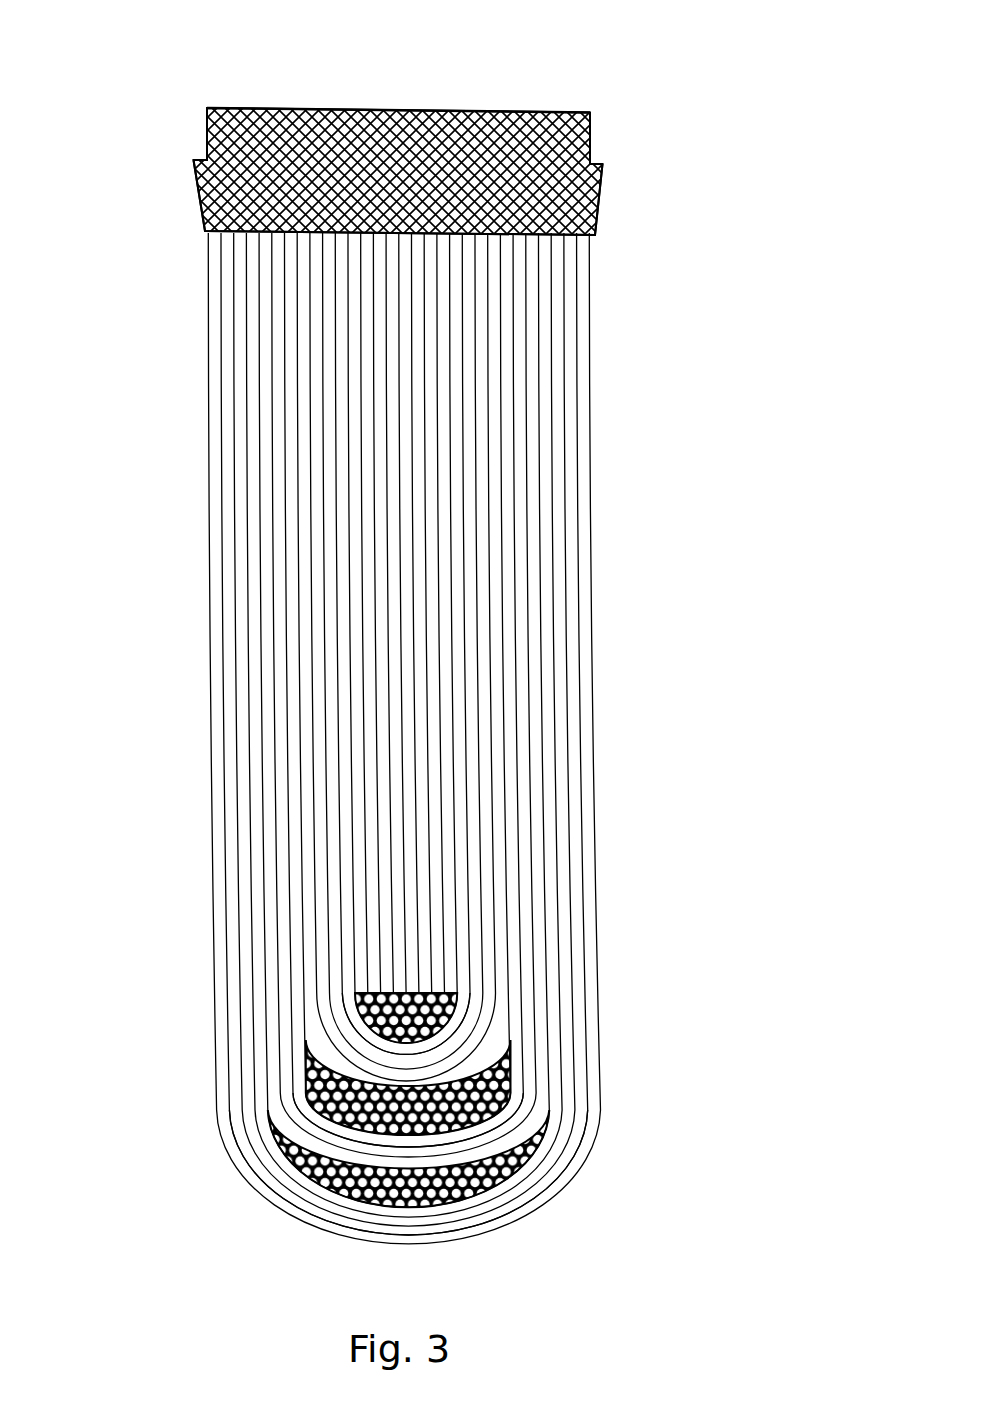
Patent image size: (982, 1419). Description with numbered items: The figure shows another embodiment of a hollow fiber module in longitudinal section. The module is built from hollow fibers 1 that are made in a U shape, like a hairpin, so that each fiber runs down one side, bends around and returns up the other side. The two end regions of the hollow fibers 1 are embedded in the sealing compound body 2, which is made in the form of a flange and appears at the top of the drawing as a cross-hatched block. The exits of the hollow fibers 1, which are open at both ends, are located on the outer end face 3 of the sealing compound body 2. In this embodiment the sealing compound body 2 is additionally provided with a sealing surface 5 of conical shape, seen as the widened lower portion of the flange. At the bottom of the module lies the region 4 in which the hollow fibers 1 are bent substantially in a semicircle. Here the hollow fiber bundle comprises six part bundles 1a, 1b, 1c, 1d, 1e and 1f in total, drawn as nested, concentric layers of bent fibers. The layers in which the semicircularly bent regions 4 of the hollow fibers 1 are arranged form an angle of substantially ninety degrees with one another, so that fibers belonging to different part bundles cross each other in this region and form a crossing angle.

The hollow fibers 1 is at (535, 511).
The part bundle 1a is at (445, 1000).
The part bundle 1b is at (485, 1022).
The part bundle 1c is at (500, 1085).
The part bundle 1d is at (493, 1130).
The part bundle 1e is at (513, 1168).
The part bundle 1f is at (498, 1208).
The sealing compound body 2 is at (258, 142).
The outer end face 3 is at (397, 108).
The semicircularly bent region 4 is at (240, 1200).
The sealing surface 5 is at (602, 207).